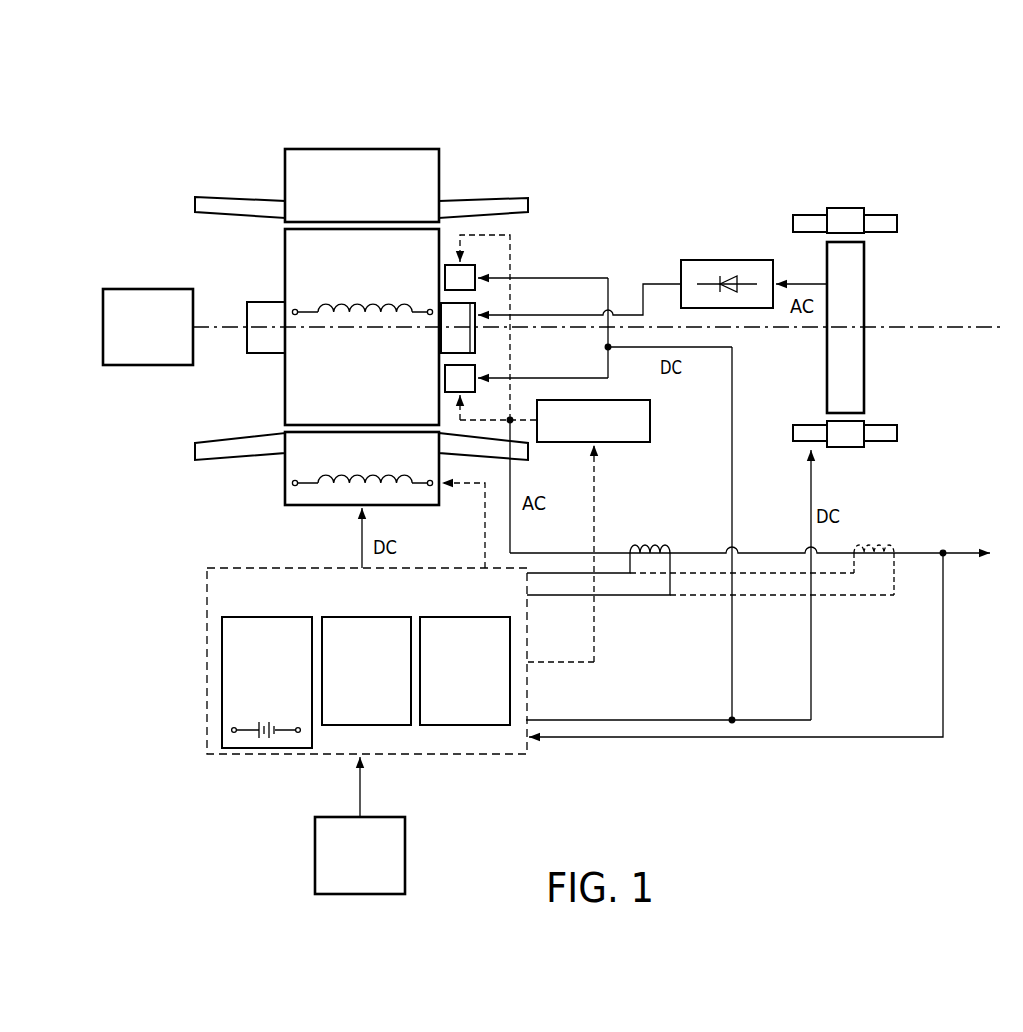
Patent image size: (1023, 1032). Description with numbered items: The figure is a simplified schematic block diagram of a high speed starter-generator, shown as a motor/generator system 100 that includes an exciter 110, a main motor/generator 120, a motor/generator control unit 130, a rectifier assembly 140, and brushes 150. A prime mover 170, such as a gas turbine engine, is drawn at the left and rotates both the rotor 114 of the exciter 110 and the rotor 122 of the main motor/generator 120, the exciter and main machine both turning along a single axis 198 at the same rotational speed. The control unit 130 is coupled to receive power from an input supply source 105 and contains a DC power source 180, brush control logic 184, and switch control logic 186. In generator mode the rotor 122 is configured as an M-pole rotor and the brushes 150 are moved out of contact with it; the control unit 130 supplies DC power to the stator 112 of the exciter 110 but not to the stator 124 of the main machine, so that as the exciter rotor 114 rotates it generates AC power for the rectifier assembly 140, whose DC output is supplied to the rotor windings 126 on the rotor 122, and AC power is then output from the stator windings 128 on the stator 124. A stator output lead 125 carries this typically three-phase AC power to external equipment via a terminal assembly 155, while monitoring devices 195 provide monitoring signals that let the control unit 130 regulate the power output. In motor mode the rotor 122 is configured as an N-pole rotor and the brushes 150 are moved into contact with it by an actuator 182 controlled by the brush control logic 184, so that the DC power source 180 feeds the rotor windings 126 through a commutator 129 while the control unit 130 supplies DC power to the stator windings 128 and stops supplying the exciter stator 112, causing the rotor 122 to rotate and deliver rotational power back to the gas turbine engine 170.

The motor/generator system 100 is at (723, 143).
The input supply source 105 is at (406, 857).
The exciter 110 is at (887, 274).
The exciter stator 112 is at (898, 434).
The exciter rotor 114 is at (866, 279).
The main motor/generator 120 is at (455, 114).
The main motor/generator rotor 122 is at (285, 249).
The main motor/generator stator 124 is at (276, 478).
The stator output lead 125 is at (758, 552).
The rotor windings 126 is at (355, 304).
The stator windings 128 is at (370, 475).
The commutator 129 is at (441, 342).
The motor/generator control unit 130 is at (207, 648).
The rectifier assembly 140 is at (730, 259).
The brushes 150 is at (445, 282).
The terminal assembly 155 is at (965, 552).
The prime mover 170 is at (102, 328).
The DC power source 180 is at (262, 749).
The actuator 182 is at (651, 423).
The brush control logic 184 is at (383, 726).
The switch control logic 186 is at (470, 726).
The monitoring devices 195 is at (656, 537).
The single axis 198 is at (978, 326).